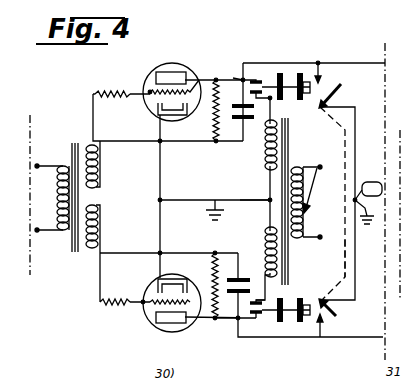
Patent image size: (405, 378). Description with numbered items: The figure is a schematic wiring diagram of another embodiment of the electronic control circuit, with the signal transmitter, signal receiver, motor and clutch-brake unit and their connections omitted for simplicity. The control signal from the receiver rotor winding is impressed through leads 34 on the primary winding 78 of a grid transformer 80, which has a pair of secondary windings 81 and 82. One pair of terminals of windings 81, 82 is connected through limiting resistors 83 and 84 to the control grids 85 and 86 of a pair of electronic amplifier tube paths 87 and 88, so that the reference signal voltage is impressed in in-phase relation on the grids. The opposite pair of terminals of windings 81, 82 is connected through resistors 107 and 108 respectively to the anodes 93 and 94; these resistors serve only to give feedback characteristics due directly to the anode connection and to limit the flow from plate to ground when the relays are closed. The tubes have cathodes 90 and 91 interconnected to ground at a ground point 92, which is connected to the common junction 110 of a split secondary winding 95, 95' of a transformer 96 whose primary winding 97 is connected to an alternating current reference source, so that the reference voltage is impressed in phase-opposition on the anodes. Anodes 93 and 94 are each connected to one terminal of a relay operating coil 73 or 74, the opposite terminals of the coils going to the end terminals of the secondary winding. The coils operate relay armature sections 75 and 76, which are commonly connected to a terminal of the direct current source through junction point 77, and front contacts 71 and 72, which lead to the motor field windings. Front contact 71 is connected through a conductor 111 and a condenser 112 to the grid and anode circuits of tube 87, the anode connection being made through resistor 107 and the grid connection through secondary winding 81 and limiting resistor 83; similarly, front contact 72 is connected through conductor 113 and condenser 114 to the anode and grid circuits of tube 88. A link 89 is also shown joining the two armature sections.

The leads 34 is at (50, 222).
The front contact 71 is at (321, 70).
The front contact 72 is at (320, 339).
The relay operating coil 73 is at (289, 73).
The relay operating coil 74 is at (289, 326).
The relay armature section 75 is at (340, 86).
The relay armature section 76 is at (340, 316).
The junction point 77 is at (358, 186).
The primary winding 78 is at (62, 158).
The grid transformer 80 is at (80, 283).
The secondary winding 81 is at (101, 166).
The secondary winding 82 is at (101, 226).
The limiting resistor 83 is at (122, 91).
The limiting resistor 84 is at (120, 306).
The control grid 85 is at (194, 80).
The control grid 86 is at (150, 312).
The electronic amplifier tube path 87 is at (211, 106).
The electronic amplifier tube path 88 is at (211, 276).
The connecting link 89 is at (343, 272).
The cathode 90 is at (150, 108).
The cathode 91 is at (151, 283).
The ground point 92 is at (220, 194).
The anode 93 is at (183, 72).
The anode 94 is at (172, 323).
The secondary winding 95 is at (254, 145).
The secondary winding 95' is at (255, 252).
The transformer 96 is at (313, 299).
The primary winding 97 is at (305, 168).
The resistor 107 is at (243, 75).
The resistor 108 is at (216, 322).
The common junction 110 is at (268, 199).
The conductor 111 is at (273, 63).
The condenser 112 is at (244, 118).
The conductor 113 is at (252, 338).
The condenser 114 is at (246, 277).